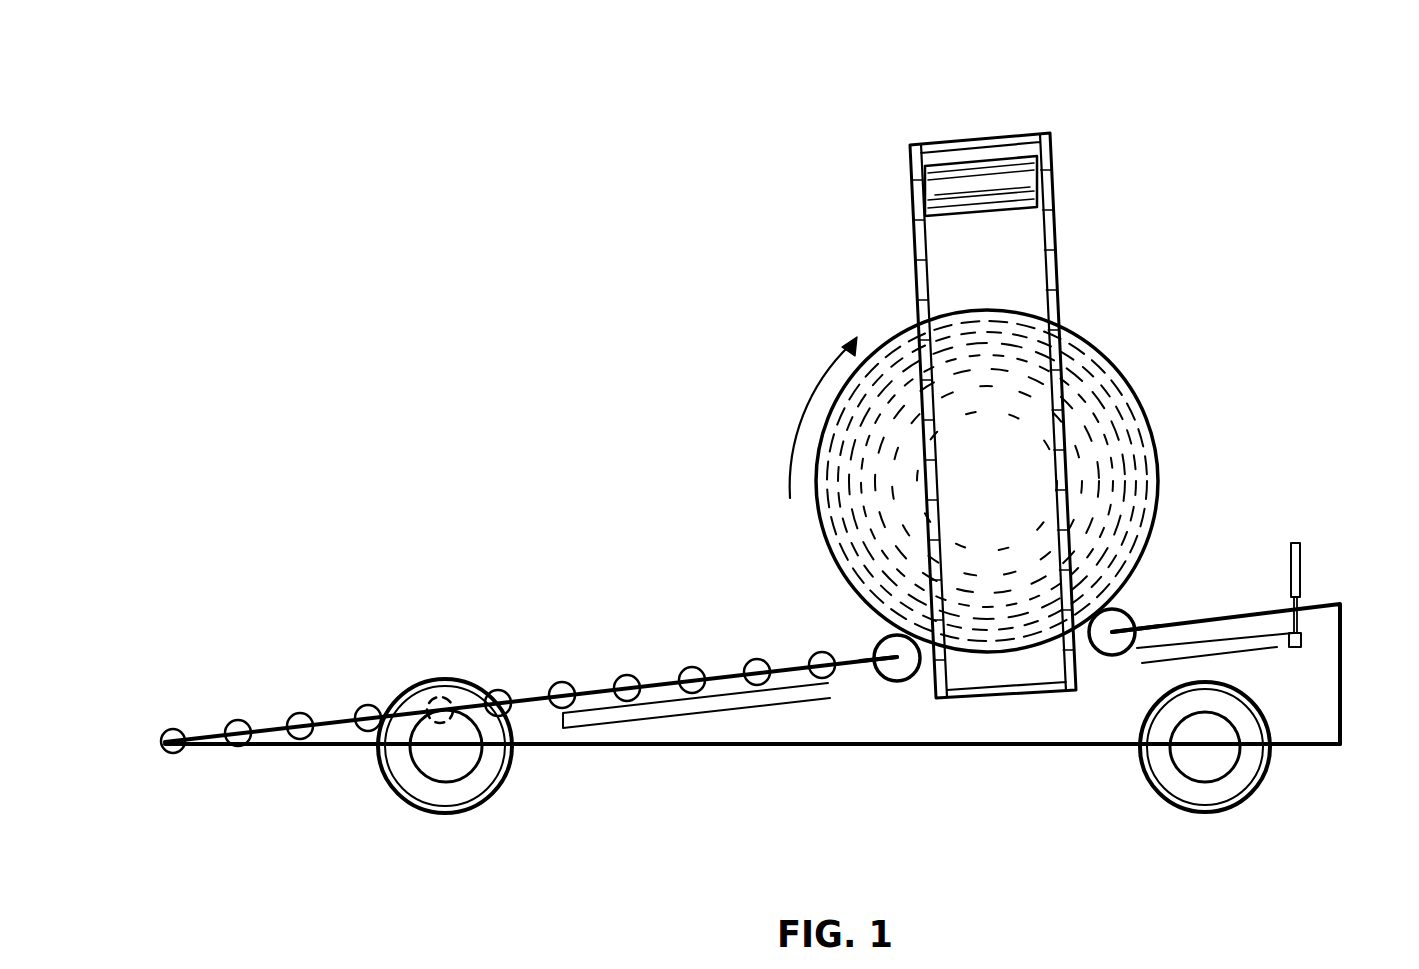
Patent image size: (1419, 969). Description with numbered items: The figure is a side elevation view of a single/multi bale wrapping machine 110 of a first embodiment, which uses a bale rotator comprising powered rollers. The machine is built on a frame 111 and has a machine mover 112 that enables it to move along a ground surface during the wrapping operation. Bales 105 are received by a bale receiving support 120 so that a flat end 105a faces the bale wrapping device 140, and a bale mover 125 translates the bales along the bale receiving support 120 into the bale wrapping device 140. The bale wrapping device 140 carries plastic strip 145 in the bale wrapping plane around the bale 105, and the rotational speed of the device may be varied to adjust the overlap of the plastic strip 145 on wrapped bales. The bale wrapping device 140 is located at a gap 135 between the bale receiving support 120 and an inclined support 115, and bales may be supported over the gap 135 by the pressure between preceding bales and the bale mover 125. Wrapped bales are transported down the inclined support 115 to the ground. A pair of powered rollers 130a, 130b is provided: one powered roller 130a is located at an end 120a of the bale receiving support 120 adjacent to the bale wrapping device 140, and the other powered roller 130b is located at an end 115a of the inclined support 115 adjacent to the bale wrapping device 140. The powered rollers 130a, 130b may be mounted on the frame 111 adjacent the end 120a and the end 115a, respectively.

The single/multi bale wrapping machine 110 is at (1107, 167).
The frame 111 is at (713, 746).
The machine mover 112 is at (488, 783).
The inclined support 115 is at (661, 660).
The end of the inclined support 115a is at (880, 637).
The bale receiving support 120 is at (1277, 610).
The end of the bale receiving support 120a is at (1135, 627).
The bale mover 125 is at (1277, 653).
The bale 105 is at (1082, 338).
The flat end 105a is at (1113, 442).
The powered roller 130a is at (1105, 649).
The powered roller 130b is at (895, 681).
The gap 135 is at (923, 684).
The bale wrapping device 140 is at (998, 133).
The plastic strip 145 is at (945, 187).